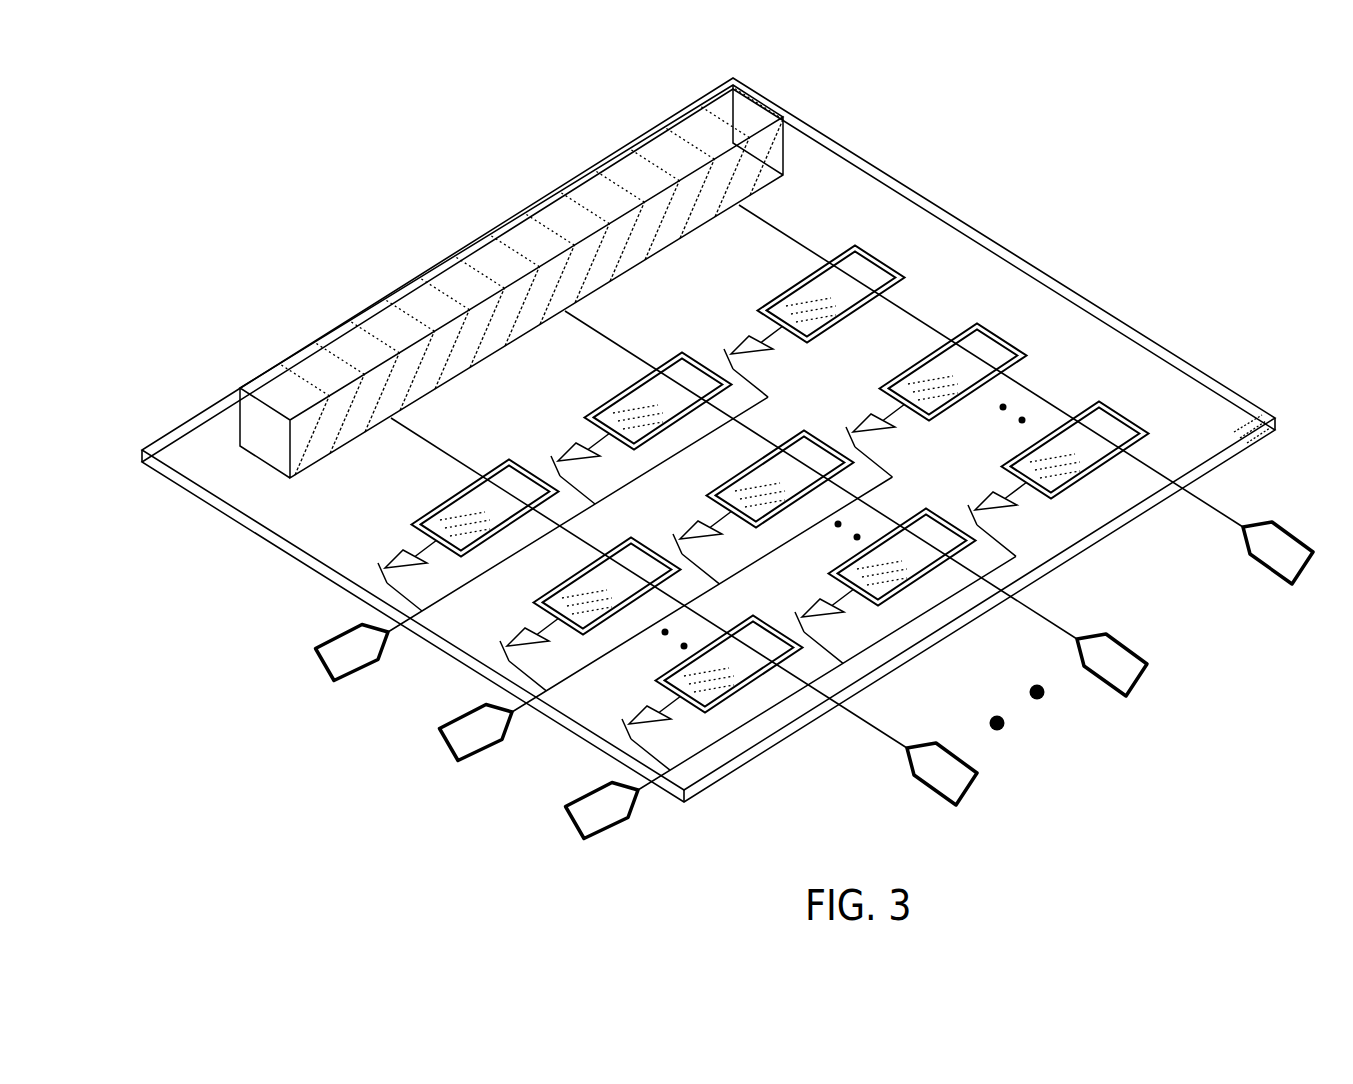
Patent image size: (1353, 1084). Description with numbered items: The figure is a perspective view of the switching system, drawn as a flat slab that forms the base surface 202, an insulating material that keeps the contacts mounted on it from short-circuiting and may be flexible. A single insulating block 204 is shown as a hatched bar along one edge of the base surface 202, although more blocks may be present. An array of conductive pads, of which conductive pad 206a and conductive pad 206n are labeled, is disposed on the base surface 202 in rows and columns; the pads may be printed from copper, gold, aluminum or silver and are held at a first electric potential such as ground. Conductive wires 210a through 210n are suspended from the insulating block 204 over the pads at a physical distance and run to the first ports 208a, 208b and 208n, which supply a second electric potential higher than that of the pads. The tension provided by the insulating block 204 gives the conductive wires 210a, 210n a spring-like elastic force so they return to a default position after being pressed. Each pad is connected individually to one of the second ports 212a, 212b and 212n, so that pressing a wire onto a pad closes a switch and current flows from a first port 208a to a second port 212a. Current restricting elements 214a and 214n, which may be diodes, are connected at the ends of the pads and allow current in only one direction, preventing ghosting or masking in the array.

The base surface 202 is at (222, 502).
The insulating block 204 is at (333, 346).
The conductive pad 206a is at (838, 253).
The conductive pad 206n is at (762, 640).
The first port 208a is at (1269, 569).
The first port 208b is at (1105, 681).
The first port 208n is at (935, 790).
The conductive wire 210a is at (912, 306).
The conductive wire 210n is at (461, 455).
The second port 212a is at (325, 663).
The second port 212b is at (448, 742).
The second port 212n is at (574, 821).
The current restricting element 214a is at (737, 336).
The current restricting element 214n is at (645, 718).